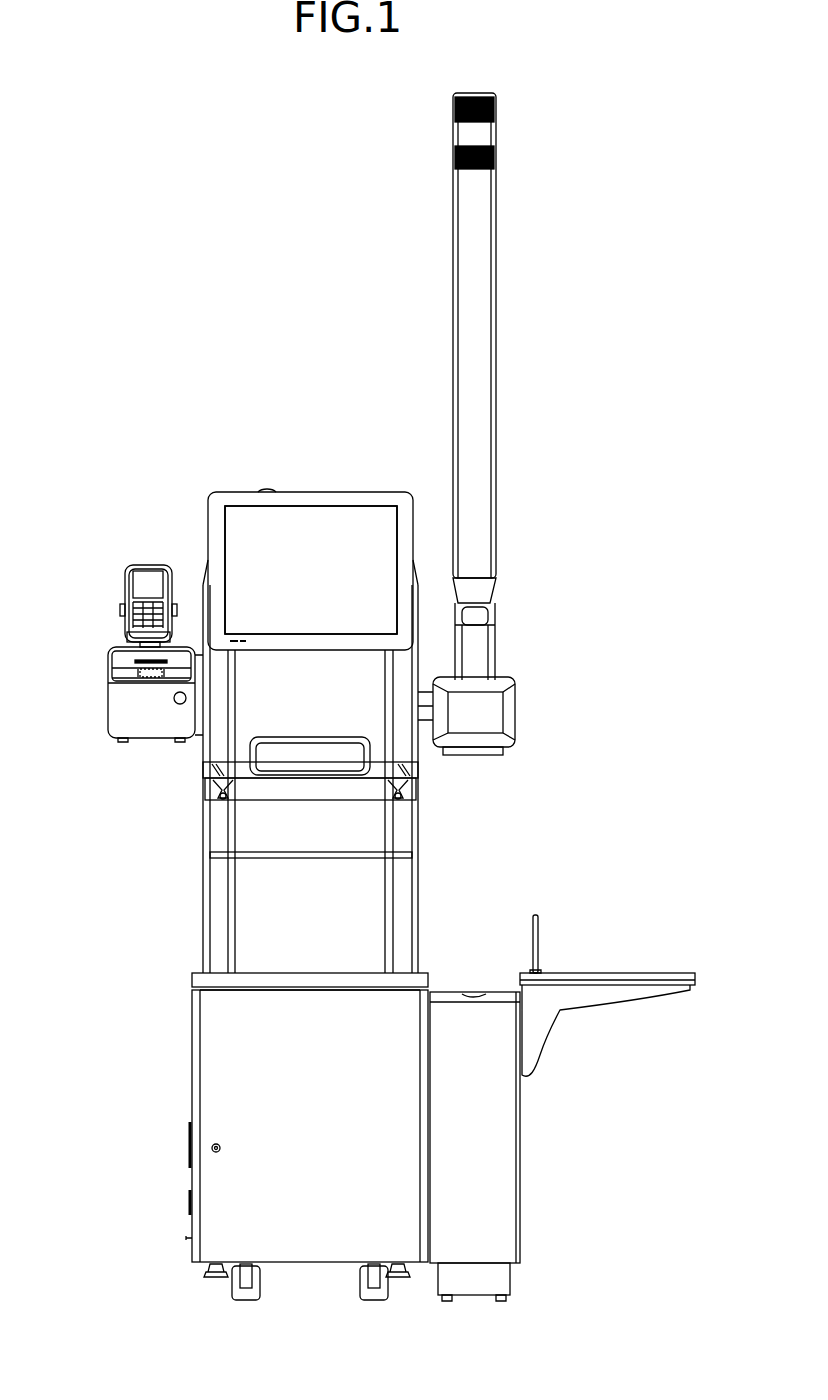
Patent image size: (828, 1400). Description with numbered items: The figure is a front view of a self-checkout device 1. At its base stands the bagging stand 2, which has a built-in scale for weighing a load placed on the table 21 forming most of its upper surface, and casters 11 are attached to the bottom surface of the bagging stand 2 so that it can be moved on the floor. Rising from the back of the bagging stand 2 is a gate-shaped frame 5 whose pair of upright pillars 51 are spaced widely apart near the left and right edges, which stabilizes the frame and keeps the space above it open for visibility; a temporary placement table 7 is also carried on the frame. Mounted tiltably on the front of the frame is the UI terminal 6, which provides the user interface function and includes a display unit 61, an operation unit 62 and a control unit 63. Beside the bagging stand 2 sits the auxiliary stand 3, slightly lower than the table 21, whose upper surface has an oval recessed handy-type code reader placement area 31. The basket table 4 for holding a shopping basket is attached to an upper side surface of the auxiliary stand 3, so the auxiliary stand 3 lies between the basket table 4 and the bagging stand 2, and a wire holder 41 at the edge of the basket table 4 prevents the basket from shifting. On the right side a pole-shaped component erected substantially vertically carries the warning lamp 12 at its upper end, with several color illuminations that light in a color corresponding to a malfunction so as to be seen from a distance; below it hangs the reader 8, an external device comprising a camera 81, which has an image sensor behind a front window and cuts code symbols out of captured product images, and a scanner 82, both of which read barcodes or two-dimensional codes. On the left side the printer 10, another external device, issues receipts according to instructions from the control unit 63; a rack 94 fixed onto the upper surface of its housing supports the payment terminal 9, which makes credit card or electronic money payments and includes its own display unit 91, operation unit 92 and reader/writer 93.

The self-checkout device 1 is at (257, 158).
The bagging stand 2 is at (218, 1057).
The auxiliary stand 3 is at (498, 1109).
The basket table 4 is at (607, 995).
The gate-shaped frame 5 is at (269, 766).
The UI terminal 6 is at (310, 528).
The temporary placement table 7 is at (278, 798).
The reader 8 is at (498, 666).
The payment terminal 9 is at (121, 562).
The printer 10 is at (125, 707).
The casters 11 is at (254, 1300).
The warning lamp 12 is at (497, 374).
The table 21 is at (268, 970).
The handy-type code reader placement area 31 is at (473, 986).
The wire holder 41 is at (540, 927).
The pillars 51 is at (400, 912).
The display unit 61 is at (330, 538).
The operation unit 62 is at (372, 535).
The control unit 63 is at (243, 538).
The camera 81 is at (478, 711).
The scanner 82 is at (482, 619).
The display unit 91 is at (137, 585).
The operation unit 92 is at (153, 610).
The reader/writer 93 is at (135, 643).
The rack 94 is at (120, 608).